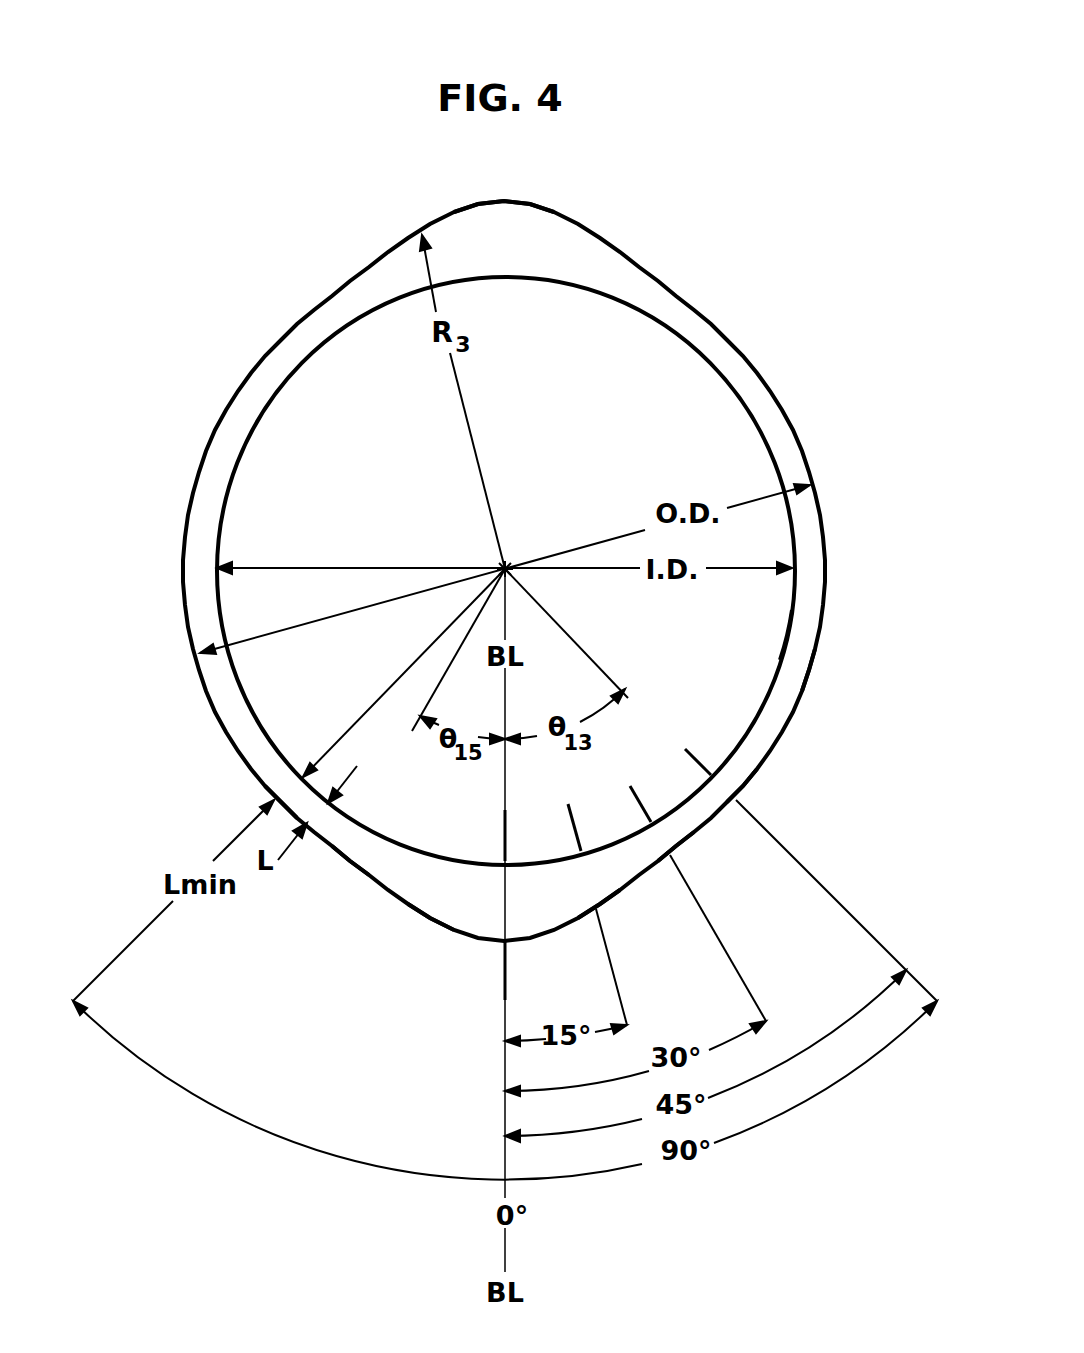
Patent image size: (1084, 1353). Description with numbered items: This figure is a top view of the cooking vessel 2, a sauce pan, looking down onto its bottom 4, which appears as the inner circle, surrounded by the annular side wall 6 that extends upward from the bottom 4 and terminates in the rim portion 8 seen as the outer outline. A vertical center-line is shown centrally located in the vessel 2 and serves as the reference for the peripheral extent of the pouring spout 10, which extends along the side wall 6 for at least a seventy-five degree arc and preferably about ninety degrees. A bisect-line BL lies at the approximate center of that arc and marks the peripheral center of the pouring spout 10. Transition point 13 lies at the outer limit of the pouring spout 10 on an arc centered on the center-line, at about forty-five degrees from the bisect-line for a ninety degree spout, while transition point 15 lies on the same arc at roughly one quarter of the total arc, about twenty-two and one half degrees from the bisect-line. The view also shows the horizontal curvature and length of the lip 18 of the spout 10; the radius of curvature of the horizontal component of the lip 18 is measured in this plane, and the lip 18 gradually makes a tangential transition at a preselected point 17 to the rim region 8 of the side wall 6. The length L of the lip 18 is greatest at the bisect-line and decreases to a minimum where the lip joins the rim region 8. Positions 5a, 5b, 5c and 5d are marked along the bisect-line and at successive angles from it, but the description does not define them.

The cooking vessel 2 is at (746, 276).
The bottom 4 is at (556, 388).
The annular side wall 6 is at (784, 641).
The rim portion 8 is at (805, 682).
The pouring spout 10 is at (376, 993).
The transition point 13 is at (274, 801).
The transition point 15 is at (354, 864).
The preselected point 17 is at (419, 911).
The lip 18 is at (488, 250).
The wall thickness measurement point at 0 degrees 5a is at (515, 822).
The wall thickness measurement point at 15 degrees 5b is at (581, 813).
The wall thickness measurement point at 30 degrees 5c is at (645, 791).
The wall thickness measurement point at 45 degrees 5d is at (701, 751).